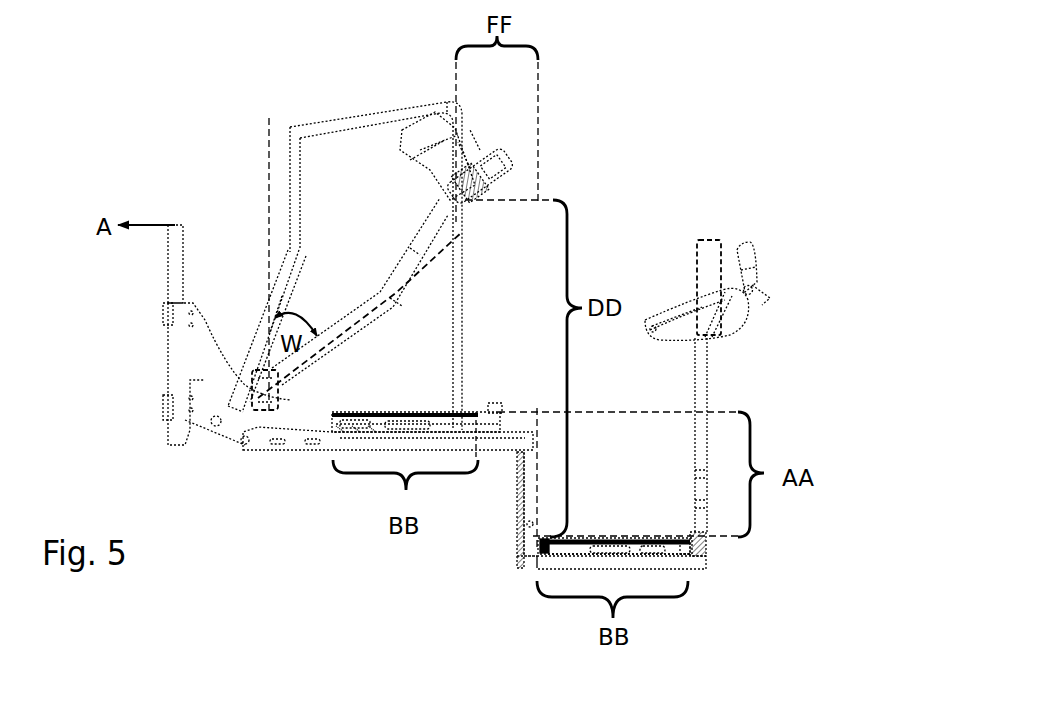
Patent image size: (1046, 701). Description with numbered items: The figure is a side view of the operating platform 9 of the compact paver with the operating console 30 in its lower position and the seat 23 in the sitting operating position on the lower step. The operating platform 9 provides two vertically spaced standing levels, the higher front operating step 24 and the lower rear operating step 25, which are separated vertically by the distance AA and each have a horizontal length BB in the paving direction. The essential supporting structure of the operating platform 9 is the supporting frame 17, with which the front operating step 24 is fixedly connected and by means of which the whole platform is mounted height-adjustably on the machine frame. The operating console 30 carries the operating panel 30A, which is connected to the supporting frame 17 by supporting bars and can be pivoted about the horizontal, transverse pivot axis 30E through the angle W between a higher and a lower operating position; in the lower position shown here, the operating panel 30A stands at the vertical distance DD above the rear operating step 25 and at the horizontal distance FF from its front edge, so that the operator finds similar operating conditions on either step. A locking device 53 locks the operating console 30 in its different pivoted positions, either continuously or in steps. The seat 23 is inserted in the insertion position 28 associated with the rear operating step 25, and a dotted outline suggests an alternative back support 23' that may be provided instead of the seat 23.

The operating platform 9 is at (656, 180).
The supporting frame 17 is at (347, 445).
The seat 23 is at (752, 321).
The back support 23' is at (765, 261).
The front operating step 24 is at (418, 418).
The rear operating step 25 is at (646, 546).
The insertion position 28 is at (700, 547).
The operating console 30 is at (380, 79).
The operating panel 30A is at (440, 153).
The pivot axis 30E is at (274, 383).
The locking device 53 is at (257, 372).